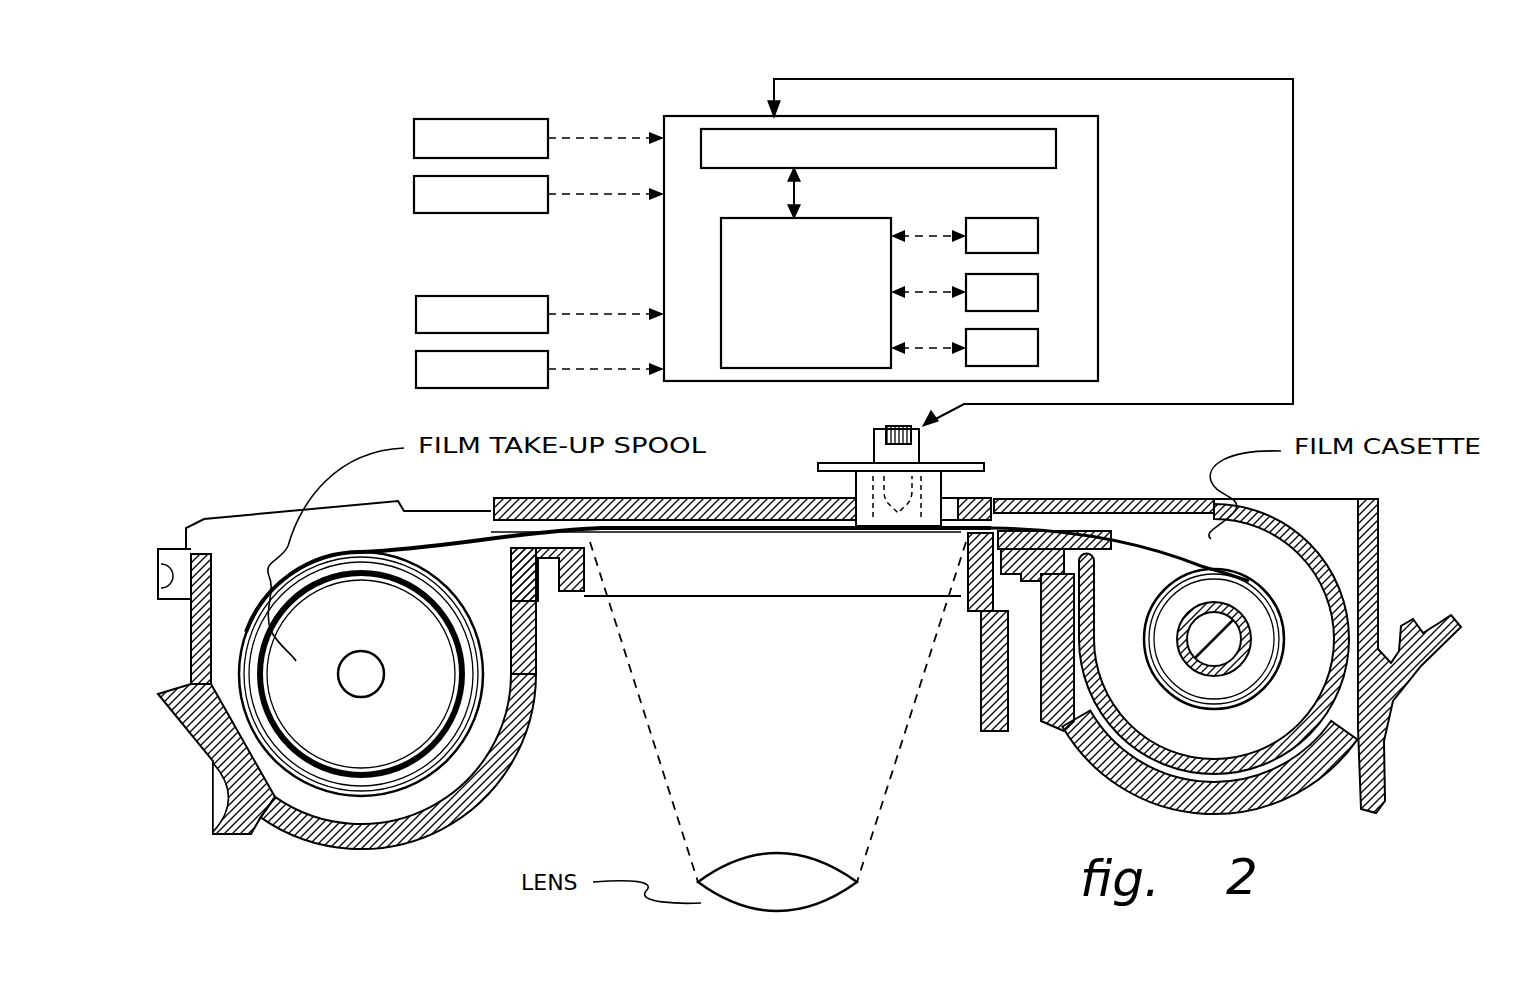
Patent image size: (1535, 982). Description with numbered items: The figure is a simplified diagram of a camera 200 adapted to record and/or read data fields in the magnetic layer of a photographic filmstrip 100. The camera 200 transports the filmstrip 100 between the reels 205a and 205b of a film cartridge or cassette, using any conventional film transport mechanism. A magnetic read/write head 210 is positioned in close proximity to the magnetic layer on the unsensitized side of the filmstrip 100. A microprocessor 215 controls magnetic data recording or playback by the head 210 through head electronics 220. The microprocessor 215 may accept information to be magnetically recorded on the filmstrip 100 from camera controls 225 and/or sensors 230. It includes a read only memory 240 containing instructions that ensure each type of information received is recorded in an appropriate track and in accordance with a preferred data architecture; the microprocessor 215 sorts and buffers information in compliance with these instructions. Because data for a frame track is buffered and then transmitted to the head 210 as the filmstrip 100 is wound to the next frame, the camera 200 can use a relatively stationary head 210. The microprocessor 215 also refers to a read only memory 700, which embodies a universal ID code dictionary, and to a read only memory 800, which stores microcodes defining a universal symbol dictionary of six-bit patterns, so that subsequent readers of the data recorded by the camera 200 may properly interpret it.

The filmstrip 100 is at (738, 528).
The camera 200 is at (1378, 540).
The reel 205a is at (1183, 693).
The reel 205b is at (450, 743).
The magnetic read/write head 210 is at (925, 447).
The microprocessor 215 is at (835, 372).
The head electronics 220 is at (1097, 130).
The camera controls 225 is at (415, 313).
The sensors 230 is at (413, 137).
The read only memory 240 is at (1037, 235).
The read only memory 700 is at (1037, 291).
The read only memory 800 is at (1037, 347).